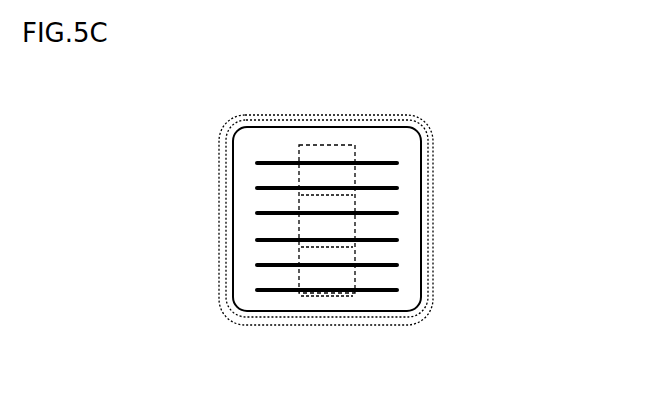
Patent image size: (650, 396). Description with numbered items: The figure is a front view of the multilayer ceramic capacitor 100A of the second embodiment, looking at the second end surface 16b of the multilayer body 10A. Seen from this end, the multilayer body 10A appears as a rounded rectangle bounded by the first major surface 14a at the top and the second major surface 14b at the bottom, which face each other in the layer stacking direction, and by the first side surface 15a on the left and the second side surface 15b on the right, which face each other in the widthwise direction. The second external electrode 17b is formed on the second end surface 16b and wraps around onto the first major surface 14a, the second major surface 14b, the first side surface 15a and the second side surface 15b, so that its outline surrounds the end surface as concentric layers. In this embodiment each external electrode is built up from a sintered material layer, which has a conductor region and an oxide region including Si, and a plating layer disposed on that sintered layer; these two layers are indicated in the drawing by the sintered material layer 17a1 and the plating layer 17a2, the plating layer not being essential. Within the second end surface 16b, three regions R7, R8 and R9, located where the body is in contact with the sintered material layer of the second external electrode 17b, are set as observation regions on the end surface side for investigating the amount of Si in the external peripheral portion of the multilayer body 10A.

The multilayer ceramic capacitor 100A is at (613, 80).
The multilayer body 10A is at (382, 121).
The first major surface 14a is at (341, 126).
The second major surface 14b is at (343, 312).
The first side surface 15a is at (232, 181).
The second side surface 15b is at (422, 181).
The second end surface 16b is at (300, 146).
The sintered material layer 17a1 is at (429, 246).
The plating layer 17a2 is at (434, 268).
The second external electrode 17b is at (490, 240).
The observation region R7 is at (298, 177).
The observation region R8 is at (298, 219).
The observation region R9 is at (298, 278).